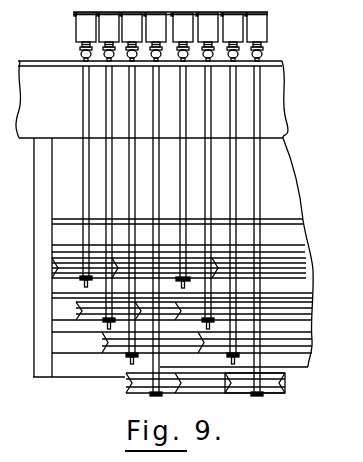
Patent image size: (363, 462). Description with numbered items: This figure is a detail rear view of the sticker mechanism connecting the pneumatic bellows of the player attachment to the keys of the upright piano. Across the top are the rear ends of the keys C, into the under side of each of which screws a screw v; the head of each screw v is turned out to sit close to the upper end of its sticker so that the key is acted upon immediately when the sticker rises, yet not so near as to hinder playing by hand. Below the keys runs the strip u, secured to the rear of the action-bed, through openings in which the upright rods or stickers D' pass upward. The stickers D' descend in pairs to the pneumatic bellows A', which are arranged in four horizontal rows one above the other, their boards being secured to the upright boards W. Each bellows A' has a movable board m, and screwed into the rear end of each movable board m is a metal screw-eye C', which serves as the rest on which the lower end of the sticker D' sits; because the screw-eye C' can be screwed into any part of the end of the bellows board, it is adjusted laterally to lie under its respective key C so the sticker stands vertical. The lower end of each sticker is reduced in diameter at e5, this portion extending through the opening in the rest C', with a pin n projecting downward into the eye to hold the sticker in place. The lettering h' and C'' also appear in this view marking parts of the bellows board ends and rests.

The key C is at (169, 23).
The screw v is at (79, 51).
The strip u is at (70, 66).
The upright boards W is at (40, 222).
The rod or sticker D' is at (173, 229).
The movable board m is at (108, 355).
The pneumatic bellows A' is at (160, 338).
The screw-eye C' is at (124, 346).
The reduced portion of sticker e5 is at (103, 325).
The pin n is at (180, 284).
The pads h' is at (201, 405).
The lower box C'' is at (255, 395).